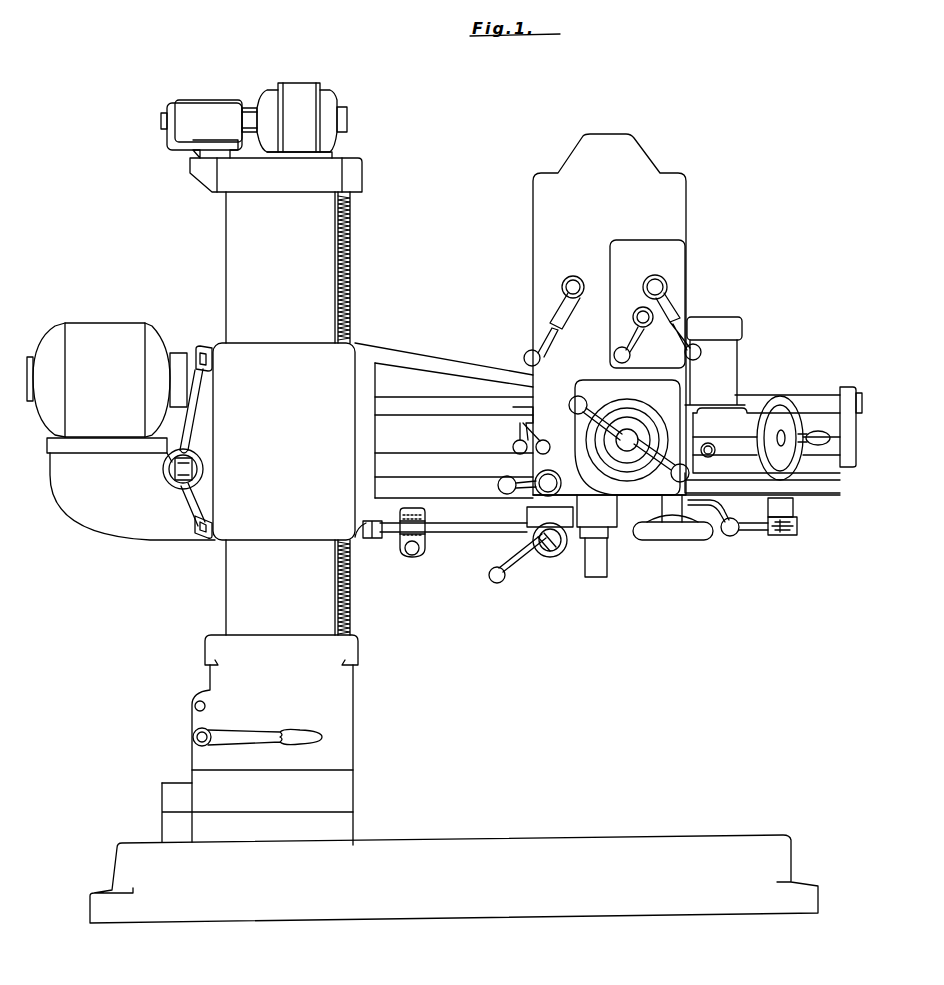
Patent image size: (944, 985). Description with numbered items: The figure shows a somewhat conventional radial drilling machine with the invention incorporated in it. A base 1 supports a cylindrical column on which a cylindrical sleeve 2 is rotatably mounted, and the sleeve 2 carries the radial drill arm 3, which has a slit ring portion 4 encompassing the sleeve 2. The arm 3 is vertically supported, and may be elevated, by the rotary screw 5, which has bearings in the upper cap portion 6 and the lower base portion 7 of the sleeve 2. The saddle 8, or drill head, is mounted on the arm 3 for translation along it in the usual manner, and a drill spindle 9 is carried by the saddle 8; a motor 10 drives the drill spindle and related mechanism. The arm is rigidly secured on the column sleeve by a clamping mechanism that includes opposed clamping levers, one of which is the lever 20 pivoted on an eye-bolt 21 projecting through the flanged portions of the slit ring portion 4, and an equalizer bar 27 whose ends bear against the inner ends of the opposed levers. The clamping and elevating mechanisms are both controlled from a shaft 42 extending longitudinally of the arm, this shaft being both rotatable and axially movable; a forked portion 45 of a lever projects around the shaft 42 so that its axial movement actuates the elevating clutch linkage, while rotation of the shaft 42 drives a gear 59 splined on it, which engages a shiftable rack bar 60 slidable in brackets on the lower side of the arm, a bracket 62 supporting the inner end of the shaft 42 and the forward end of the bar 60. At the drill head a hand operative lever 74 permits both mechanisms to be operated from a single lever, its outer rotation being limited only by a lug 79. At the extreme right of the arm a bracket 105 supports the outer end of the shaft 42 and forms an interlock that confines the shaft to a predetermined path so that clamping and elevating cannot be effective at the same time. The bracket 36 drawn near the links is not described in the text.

The base 1 is at (454, 879).
The cylindrical sleeve 2 is at (238, 612).
The radial drill arm 3 is at (407, 355).
The slit ring portion 4 is at (278, 352).
The rotary screw 5 is at (345, 230).
The upper cap portion 6 is at (362, 173).
The lower base portion 7 is at (353, 672).
The saddle 8 is at (675, 220).
The drill spindle 9 is at (600, 558).
The motor 10 is at (90, 336).
The clamping lever 20 is at (190, 437).
The eye-bolt 21 is at (202, 507).
The equalizer bar 27 is at (198, 464).
The link bracket 36 is at (196, 346).
The shaft 42 is at (480, 527).
The forked portion 45 is at (373, 540).
The gear 59 is at (427, 512).
The shiftable bar 60 is at (415, 553).
The bracket 62 is at (425, 543).
The hand operative lever 74 is at (527, 558).
The lug 79 is at (558, 563).
The bracket 105 is at (795, 537).